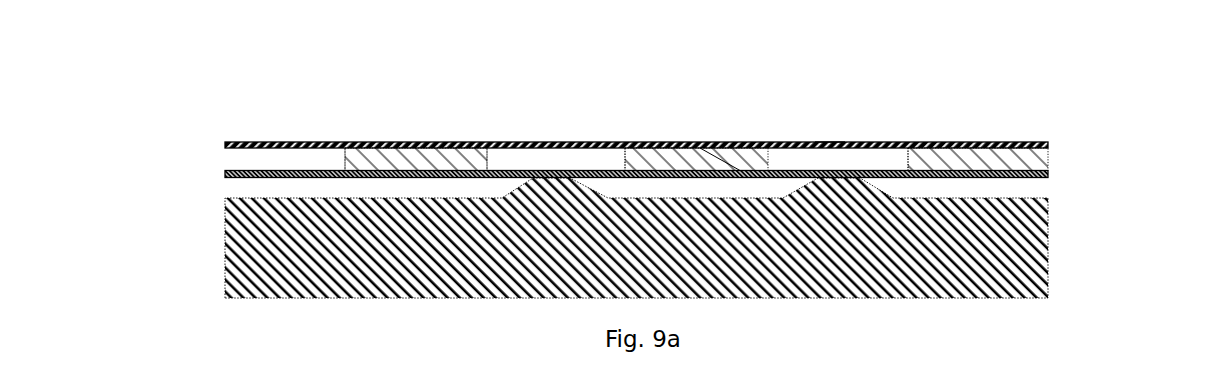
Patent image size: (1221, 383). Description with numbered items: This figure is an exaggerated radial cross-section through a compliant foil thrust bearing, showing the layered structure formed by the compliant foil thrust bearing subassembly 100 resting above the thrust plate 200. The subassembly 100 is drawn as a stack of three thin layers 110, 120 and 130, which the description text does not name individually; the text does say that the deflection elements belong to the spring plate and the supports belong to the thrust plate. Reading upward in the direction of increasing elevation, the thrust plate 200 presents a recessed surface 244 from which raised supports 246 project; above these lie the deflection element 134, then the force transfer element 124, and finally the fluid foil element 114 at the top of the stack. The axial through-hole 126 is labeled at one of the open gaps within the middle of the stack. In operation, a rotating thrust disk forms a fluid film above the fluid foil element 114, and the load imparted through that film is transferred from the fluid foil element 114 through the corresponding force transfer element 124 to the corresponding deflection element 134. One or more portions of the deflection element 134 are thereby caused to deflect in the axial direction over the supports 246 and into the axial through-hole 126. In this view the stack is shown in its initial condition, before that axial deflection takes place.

The compliant foil thrust bearing subassembly 100 is at (636, 121).
The top layer 110 is at (1048, 142).
The fluid foil element 114 is at (828, 141).
The intermediate layer 120 is at (1048, 159).
The force transfer element 124 is at (715, 168).
The axial through-hole 126 is at (887, 164).
The bottom layer 130 is at (1048, 176).
The deflection element 134 is at (603, 168).
The thrust plate 200 is at (210, 250).
The recessed surface 244 is at (357, 192).
The supports 246 is at (511, 185).